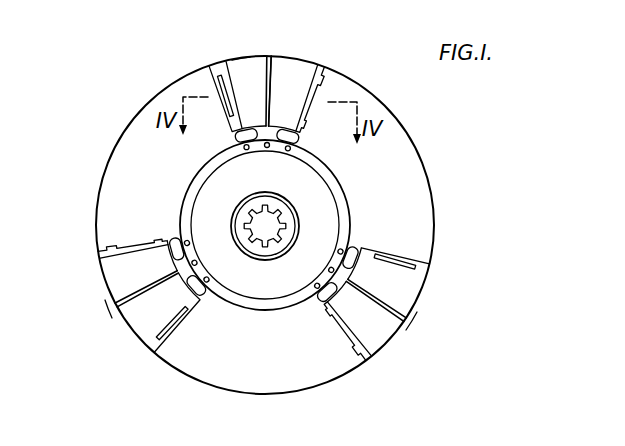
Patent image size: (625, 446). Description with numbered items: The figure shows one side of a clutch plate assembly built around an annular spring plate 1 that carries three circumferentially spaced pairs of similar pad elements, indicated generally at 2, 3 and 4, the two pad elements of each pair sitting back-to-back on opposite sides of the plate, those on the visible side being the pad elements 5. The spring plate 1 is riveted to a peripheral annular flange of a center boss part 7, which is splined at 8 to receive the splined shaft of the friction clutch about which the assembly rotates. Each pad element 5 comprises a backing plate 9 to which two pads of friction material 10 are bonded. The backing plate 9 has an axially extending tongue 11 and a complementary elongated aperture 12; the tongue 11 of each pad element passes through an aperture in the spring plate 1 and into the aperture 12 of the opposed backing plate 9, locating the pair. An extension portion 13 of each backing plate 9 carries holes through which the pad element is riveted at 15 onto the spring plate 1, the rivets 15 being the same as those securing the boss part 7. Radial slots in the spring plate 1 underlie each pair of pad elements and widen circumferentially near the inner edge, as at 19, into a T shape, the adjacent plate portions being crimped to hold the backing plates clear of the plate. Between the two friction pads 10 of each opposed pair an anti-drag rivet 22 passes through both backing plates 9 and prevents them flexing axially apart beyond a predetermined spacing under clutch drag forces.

The annular spring plate 1 is at (110, 168).
The first pair of pad elements 2 is at (240, 52).
The second pair of pad elements 3 is at (112, 310).
The third pair of pad elements 4 is at (410, 323).
The pad element 5 is at (318, 121).
The center boss part 7 is at (203, 195).
The splines 8 is at (250, 208).
The backing plate 9 is at (212, 78).
The pad of friction material 10 is at (258, 62).
The tongue 11 is at (322, 90).
The elongated aperture 12 is at (222, 114).
The extension portion 13 is at (270, 133).
The rivets 15 is at (267, 149).
The widened slot portion 19 is at (300, 140).
The anti-drag rivet 22 is at (272, 72).